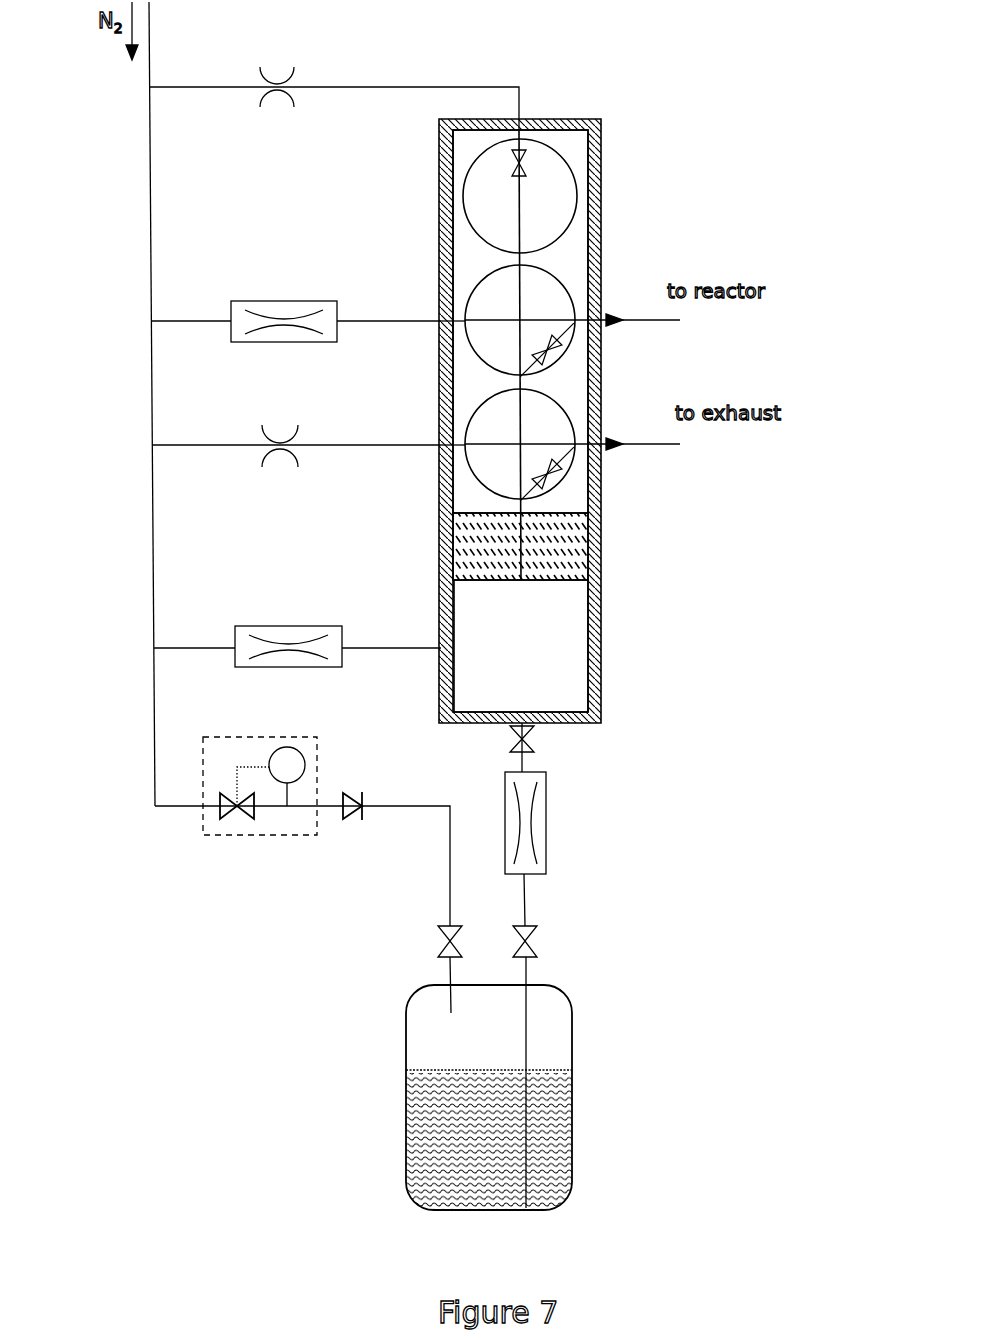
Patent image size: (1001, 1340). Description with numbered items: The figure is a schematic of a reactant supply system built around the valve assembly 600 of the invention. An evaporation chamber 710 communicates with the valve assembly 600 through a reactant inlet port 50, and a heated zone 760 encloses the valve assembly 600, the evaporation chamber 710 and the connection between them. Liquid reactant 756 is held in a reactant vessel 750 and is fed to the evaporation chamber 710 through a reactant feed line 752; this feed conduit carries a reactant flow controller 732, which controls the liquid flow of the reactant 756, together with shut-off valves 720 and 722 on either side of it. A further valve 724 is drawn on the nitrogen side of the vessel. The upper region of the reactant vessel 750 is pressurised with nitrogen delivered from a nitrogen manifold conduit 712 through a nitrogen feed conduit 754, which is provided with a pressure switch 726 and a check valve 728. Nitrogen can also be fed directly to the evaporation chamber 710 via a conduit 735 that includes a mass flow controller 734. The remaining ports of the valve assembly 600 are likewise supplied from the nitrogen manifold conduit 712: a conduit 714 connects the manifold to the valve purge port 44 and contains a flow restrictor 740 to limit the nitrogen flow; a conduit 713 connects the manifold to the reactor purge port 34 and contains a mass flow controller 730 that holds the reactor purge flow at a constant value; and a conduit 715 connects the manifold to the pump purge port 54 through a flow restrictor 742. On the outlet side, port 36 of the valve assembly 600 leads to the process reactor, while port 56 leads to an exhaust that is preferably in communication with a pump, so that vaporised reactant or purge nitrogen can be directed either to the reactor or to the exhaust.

The nitrogen manifold conduit 712 is at (152, 367).
The conduit 714 is at (180, 87).
The flow restrictor 740 is at (271, 68).
The conduit 713 is at (177, 321).
The mass flow controller 730 is at (284, 301).
The conduit 715 is at (183, 445).
The flow restrictor 742 is at (283, 428).
The conduit 735 is at (190, 648).
The mass flow controller 734 is at (274, 626).
The valve assembly 600 is at (597, 233).
The valve purge port 44 is at (519, 130).
The reactor purge port 34 is at (441, 316).
The port 36 is at (598, 313).
The pump purge port 54 is at (443, 438).
The port 56 is at (597, 441).
The reactant inlet port 50 is at (470, 517).
The heated zone 760 is at (603, 553).
The evaporation chamber 710 is at (603, 666).
The shut-off valve 720 is at (535, 740).
The reactant flow controller 732 is at (549, 818).
The shut-off valve 722 is at (540, 936).
The valve 724 is at (438, 938).
The pressure switch 726 is at (231, 839).
The check valve 728 is at (352, 793).
The nitrogen feed conduit 754 is at (170, 807).
The reactant feed line 752 is at (528, 1032).
The reactant vessel 750 is at (572, 1137).
The reactant 756 is at (407, 1084).